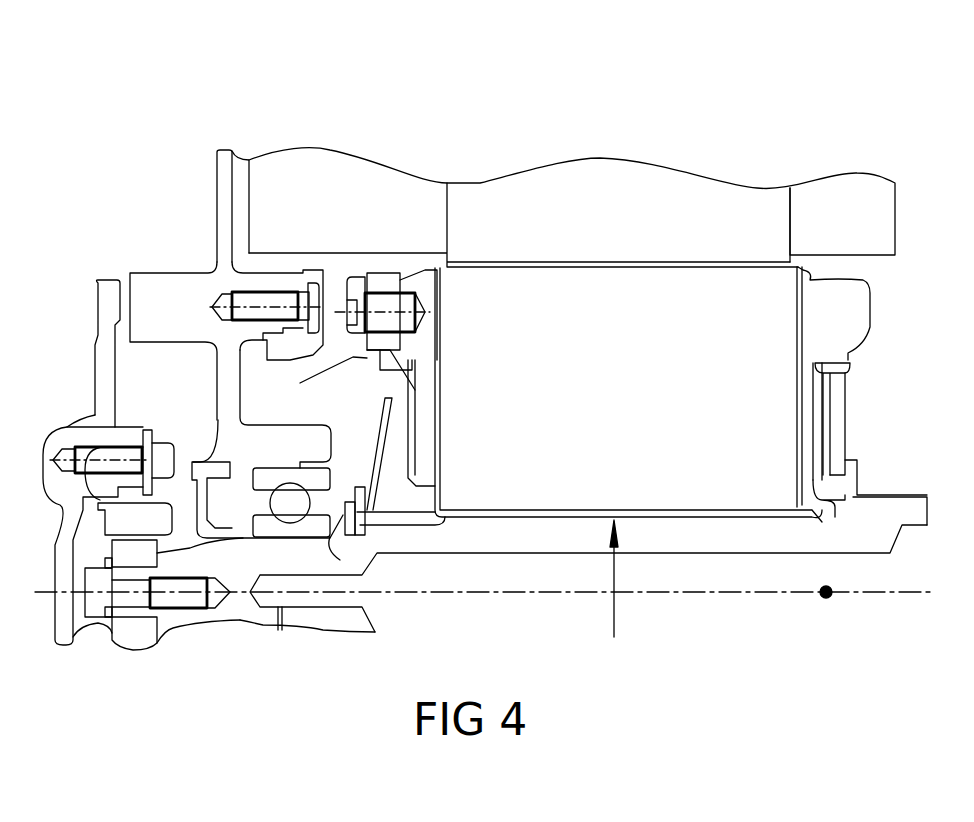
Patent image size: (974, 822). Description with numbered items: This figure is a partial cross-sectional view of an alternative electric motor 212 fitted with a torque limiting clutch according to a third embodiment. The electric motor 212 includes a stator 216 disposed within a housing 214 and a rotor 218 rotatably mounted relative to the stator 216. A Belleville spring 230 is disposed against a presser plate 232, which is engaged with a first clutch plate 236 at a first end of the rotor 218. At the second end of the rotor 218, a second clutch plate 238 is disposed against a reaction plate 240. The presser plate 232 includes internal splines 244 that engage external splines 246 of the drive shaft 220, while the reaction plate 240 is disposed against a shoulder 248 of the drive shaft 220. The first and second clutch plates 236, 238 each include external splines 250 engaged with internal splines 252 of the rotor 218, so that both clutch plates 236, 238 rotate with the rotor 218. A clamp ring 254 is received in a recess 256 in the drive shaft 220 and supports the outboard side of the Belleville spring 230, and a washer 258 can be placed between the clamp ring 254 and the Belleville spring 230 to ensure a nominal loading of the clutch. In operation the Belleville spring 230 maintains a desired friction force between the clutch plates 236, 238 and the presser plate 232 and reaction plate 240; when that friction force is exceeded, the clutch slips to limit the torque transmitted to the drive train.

The electric motor 212 is at (893, 125).
The housing 214 is at (223, 205).
The stator 216 is at (690, 195).
The rotor 218 is at (725, 287).
The drive shaft 220 is at (853, 535).
The Belleville spring 230 is at (388, 420).
The presser plate 232 is at (383, 362).
The first clutch plate 236 is at (390, 362).
The second clutch plate 238 is at (820, 424).
The reaction plate 240 is at (838, 452).
The internal splines 244 is at (405, 518).
The external splines 246 is at (445, 515).
The shoulder 248 is at (857, 493).
The external splines 250 is at (413, 372).
The internal splines 252 is at (403, 372).
The clamp ring 254 is at (343, 533).
The recess 256 is at (340, 535).
The washer 258 is at (360, 500).